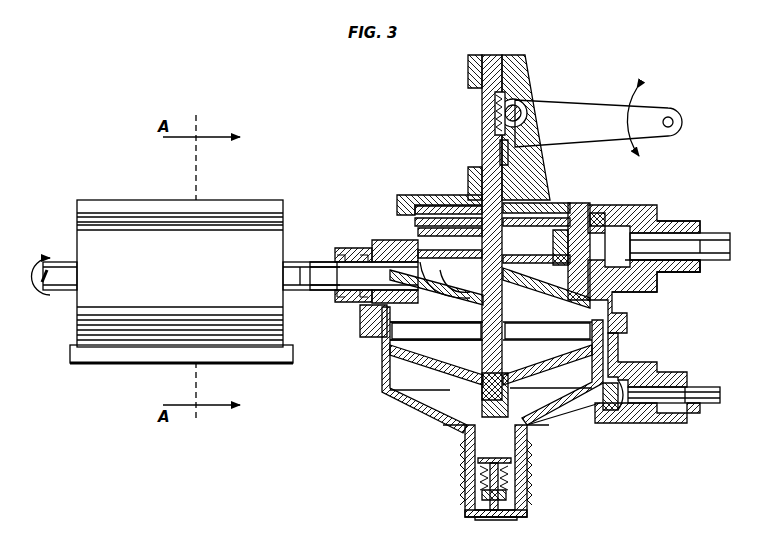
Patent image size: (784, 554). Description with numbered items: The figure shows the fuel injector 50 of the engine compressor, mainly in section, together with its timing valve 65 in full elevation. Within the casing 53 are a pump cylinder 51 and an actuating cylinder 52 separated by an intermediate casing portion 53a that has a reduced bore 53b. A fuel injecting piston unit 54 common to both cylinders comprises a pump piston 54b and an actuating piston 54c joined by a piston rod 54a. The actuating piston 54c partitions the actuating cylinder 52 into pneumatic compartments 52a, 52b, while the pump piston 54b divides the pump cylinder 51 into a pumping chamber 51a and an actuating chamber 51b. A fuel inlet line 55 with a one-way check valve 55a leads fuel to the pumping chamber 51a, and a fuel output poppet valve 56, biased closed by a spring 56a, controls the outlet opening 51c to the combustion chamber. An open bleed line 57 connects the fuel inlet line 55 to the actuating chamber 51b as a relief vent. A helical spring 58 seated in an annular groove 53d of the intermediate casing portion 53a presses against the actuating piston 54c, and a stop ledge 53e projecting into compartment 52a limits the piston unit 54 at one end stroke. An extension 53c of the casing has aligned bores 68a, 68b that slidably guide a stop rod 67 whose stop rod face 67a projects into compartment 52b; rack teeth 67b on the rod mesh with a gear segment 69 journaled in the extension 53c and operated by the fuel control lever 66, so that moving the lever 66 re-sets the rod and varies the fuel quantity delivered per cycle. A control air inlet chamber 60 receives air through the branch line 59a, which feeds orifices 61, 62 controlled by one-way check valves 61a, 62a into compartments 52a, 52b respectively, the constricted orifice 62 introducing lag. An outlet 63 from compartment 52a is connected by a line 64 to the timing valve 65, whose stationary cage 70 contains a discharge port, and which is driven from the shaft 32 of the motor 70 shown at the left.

The motor shaft 32 is at (52, 262).
The injector 50 is at (462, 490).
The pump cylinder 51 is at (382, 388).
The pumping chamber 51a is at (512, 395).
The actuating chamber 51b is at (547, 335).
The outlet opening 51c is at (520, 508).
The actuating cylinder 52 is at (405, 232).
The pneumatic compartment 52a is at (408, 218).
The pneumatic compartment 52b is at (405, 204).
The casing 53 is at (402, 196).
The intermediate casing portion 53a is at (440, 318).
The reduced bore 53b is at (535, 292).
The extension 53c is at (528, 58).
The annular groove 53d is at (370, 320).
The stop ledge 53e is at (560, 256).
The fuel injecting piston unit 54 is at (445, 418).
The piston rod 54a is at (480, 330).
The pump piston 54b is at (575, 398).
The actuating piston 54c is at (592, 208).
The fuel inlet line 55 is at (700, 403).
The one-way check valve 55a is at (622, 410).
The fuel output poppet valve 56 is at (495, 518).
The spring 56a is at (505, 474).
The bleed line 57 is at (625, 370).
The helical spring 58 is at (475, 280).
The branch line 59a is at (724, 233).
The control air inlet chamber 60 is at (700, 225).
The orifice 61 is at (580, 270).
The one-way check valve 61a is at (630, 292).
The orifice 62 is at (608, 226).
The one-way check valve 62a is at (620, 245).
The outlet 63 is at (352, 290).
The line 64 is at (303, 272).
The timing valve 65 is at (268, 364).
The fuel control lever 66 is at (594, 115).
The stop rod 67 is at (492, 55).
The stop rod face 67a is at (510, 196).
The rack teeth 67b is at (492, 100).
The bore 68a is at (468, 72).
The bore 68b is at (468, 180).
The gear segment 69 is at (518, 100).
The stationary cage 70 is at (120, 343).